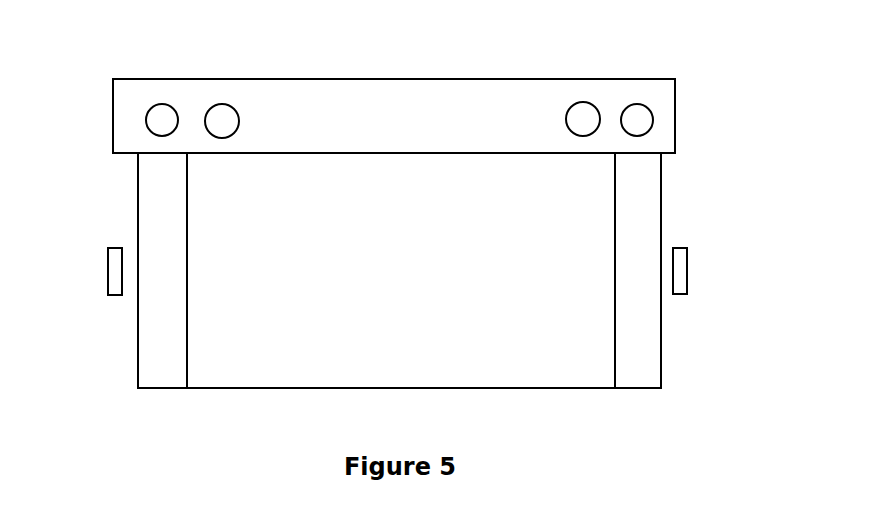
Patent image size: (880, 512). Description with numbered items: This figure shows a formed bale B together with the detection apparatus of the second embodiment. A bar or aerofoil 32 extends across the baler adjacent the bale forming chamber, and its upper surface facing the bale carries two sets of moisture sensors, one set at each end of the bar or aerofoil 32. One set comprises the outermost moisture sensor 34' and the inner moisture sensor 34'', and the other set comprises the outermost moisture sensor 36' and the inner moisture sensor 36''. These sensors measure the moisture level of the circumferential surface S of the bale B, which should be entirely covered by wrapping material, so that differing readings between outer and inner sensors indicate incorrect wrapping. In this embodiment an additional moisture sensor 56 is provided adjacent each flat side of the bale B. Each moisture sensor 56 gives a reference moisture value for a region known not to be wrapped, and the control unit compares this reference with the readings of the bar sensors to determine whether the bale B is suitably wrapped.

The bar or aerofoil 32 is at (392, 95).
The outermost moisture sensor 34' is at (166, 75).
The inner moisture sensor 34'' is at (227, 76).
The outermost moisture sensor 36' is at (644, 80).
The inner moisture sensor 36'' is at (592, 80).
The additional moisture sensor 56 is at (112, 277).
The circumferential surface S is at (647, 198).
The formed bale B is at (681, 362).